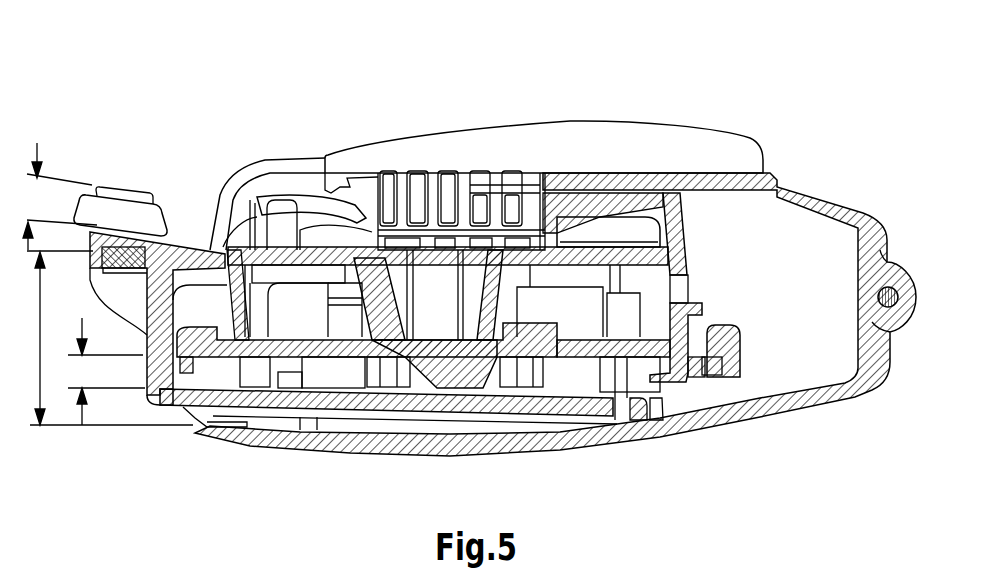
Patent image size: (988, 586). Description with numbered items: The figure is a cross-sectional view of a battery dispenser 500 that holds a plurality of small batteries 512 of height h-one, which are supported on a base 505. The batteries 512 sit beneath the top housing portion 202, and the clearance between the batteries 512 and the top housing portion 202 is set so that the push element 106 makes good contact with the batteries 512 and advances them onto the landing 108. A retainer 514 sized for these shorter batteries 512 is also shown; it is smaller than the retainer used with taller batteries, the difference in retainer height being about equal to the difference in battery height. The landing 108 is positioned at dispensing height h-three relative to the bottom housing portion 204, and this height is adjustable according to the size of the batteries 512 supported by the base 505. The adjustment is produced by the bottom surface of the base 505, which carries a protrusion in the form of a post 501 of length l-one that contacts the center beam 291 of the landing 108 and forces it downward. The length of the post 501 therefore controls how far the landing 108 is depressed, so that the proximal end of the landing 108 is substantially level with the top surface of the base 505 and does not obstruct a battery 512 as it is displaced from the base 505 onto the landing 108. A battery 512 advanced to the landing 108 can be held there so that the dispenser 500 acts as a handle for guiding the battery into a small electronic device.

The battery dispenser 500 is at (180, 96).
The push element 106 is at (592, 130).
The top housing portion 202 is at (298, 162).
The bottom housing portion 204 is at (347, 444).
The battery 512 is at (128, 212).
The retainer 514 is at (245, 220).
The landing 108 is at (168, 405).
The post 501 is at (500, 400).
The base 505 is at (267, 404).
The center beam 291 is at (442, 415).